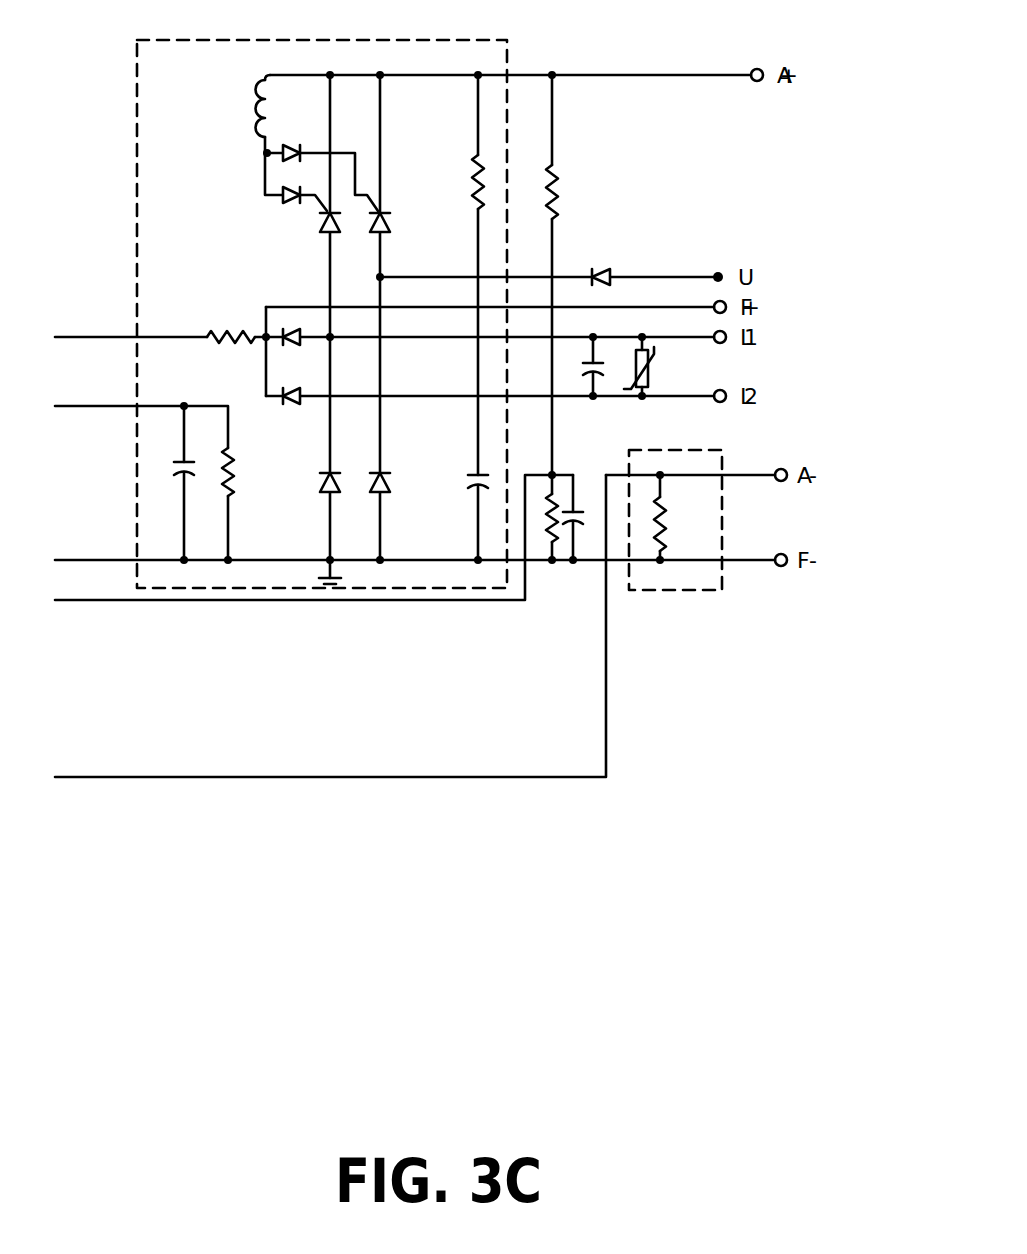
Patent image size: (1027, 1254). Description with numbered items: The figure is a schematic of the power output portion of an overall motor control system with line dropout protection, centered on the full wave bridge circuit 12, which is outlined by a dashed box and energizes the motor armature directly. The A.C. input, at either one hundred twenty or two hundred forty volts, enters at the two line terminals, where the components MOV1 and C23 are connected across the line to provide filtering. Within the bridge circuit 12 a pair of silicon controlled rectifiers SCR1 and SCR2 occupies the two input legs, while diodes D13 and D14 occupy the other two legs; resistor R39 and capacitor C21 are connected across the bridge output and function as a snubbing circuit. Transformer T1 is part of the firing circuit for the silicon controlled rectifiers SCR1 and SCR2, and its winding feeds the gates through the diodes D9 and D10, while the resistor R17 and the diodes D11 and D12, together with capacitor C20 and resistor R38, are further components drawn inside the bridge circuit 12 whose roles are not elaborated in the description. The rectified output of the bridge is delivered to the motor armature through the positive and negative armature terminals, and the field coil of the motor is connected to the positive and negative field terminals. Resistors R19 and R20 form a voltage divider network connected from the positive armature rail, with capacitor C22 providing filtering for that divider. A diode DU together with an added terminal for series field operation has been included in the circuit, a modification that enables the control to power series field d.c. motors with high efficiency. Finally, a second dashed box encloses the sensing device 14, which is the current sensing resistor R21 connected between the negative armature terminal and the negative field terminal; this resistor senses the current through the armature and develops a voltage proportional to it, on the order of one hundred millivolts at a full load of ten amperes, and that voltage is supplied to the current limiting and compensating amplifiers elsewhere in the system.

The full wave bridge circuit 12 is at (441, 40).
The sensing device 14 is at (703, 591).
The transformer T1 is at (248, 114).
The diode D9 is at (284, 139).
The diode D10 is at (275, 189).
The silicon controlled rectifier SCR1 is at (311, 238).
The silicon controlled rectifier SCR2 is at (401, 238).
The resistor R39 is at (460, 182).
The resistor R19 is at (573, 192).
The diode DU is at (598, 261).
The resistor R17 is at (231, 322).
The diode D11 is at (296, 351).
The diode D12 is at (296, 412).
The capacitor C23 is at (579, 357).
The metal oxide varistor MOV1 is at (664, 368).
The capacitor C20 is at (174, 464).
The resistor R38 is at (240, 486).
The diode D13 is at (310, 489).
The diode D14 is at (395, 497).
The capacitor C21 is at (464, 468).
The capacitor C22 is at (580, 504).
The resistor R20 is at (541, 518).
The current sensing resistor R21 is at (678, 524).